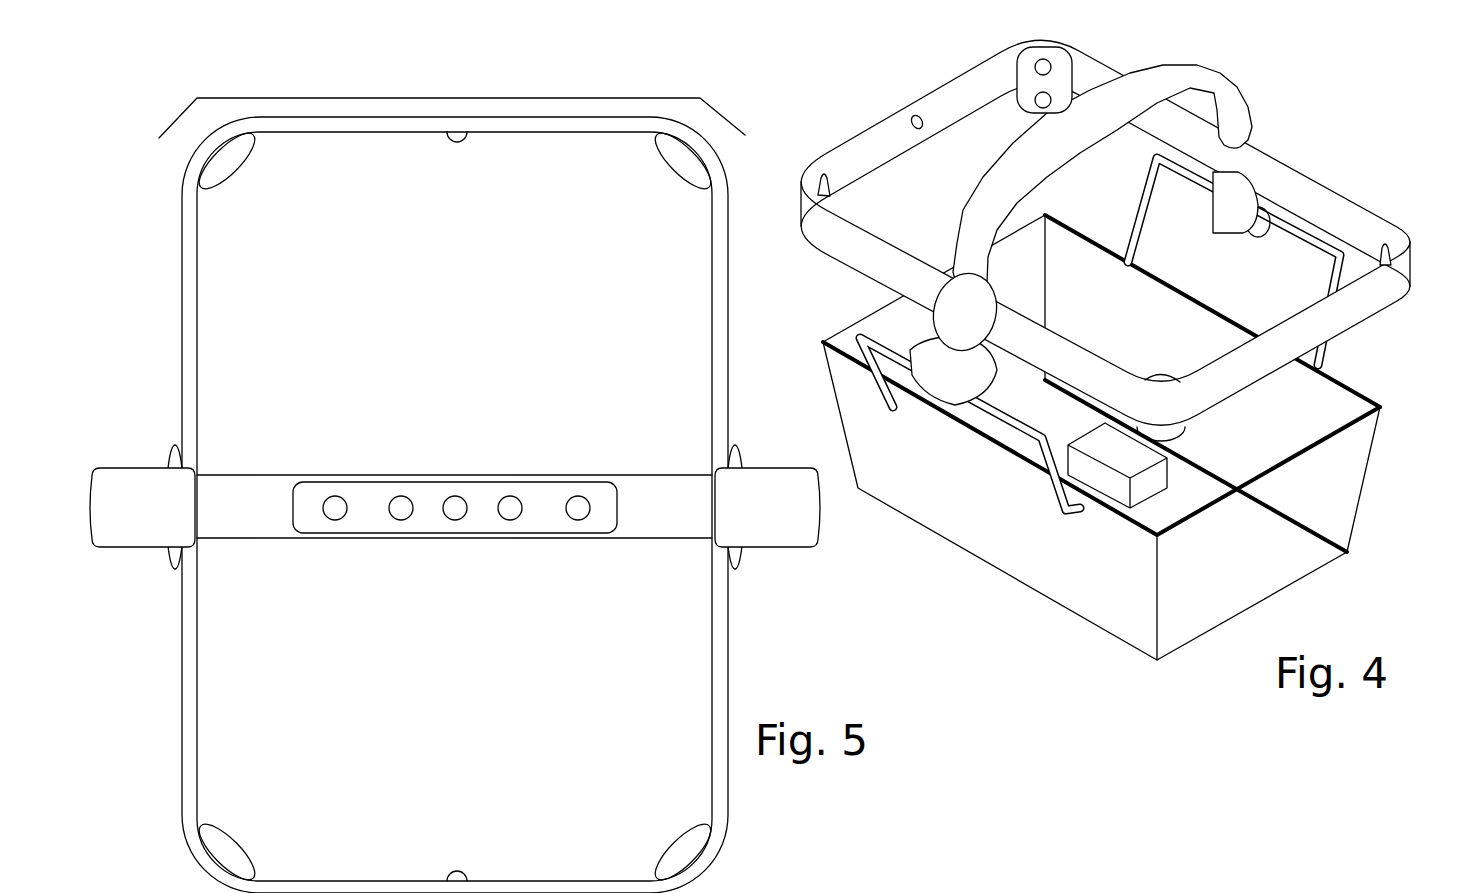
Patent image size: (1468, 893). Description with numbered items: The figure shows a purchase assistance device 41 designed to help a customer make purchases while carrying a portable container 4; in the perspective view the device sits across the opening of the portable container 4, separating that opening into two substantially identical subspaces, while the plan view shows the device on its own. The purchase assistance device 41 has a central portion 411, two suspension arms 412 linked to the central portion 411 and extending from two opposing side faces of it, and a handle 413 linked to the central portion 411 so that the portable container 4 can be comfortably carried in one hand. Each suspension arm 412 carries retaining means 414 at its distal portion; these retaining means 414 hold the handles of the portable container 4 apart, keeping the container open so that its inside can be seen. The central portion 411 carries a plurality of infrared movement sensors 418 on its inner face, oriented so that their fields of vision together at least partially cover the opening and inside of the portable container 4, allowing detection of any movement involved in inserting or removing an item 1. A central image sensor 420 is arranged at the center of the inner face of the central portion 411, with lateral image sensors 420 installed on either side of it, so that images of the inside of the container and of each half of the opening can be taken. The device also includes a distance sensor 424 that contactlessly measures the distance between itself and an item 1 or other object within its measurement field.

In FIG. 4, the item 1 is at (1150, 482).
In FIG. 4, the portable container 4 is at (1340, 552).
In FIG. 5, the purchase assistance device 41 is at (470, 463).
In FIG. 4, the purchase assistance device 41 is at (1132, 341).
In FIG. 5, the central portion 411 is at (495, 93).
In FIG. 4, the central portion 411 is at (948, 90).
In FIG. 5, the suspension arms 412 is at (162, 548).
In FIG. 4, the suspension arms 412 is at (1243, 236).
In FIG. 5, the handle 413 is at (240, 540).
In FIG. 4, the handle 413 is at (1236, 82).
In FIG. 4, the retaining means 414 is at (915, 338).
In FIG. 5, the movement sensor 418 is at (403, 521).
In FIG. 4, the movement sensor 418 is at (1048, 65).
In FIG. 5, the image sensor 420 is at (243, 178).
In FIG. 4, the image sensor 420 is at (1040, 102).
In FIG. 5, the distance sensor 424 is at (458, 142).
In FIG. 4, the distance sensor 424 is at (895, 120).